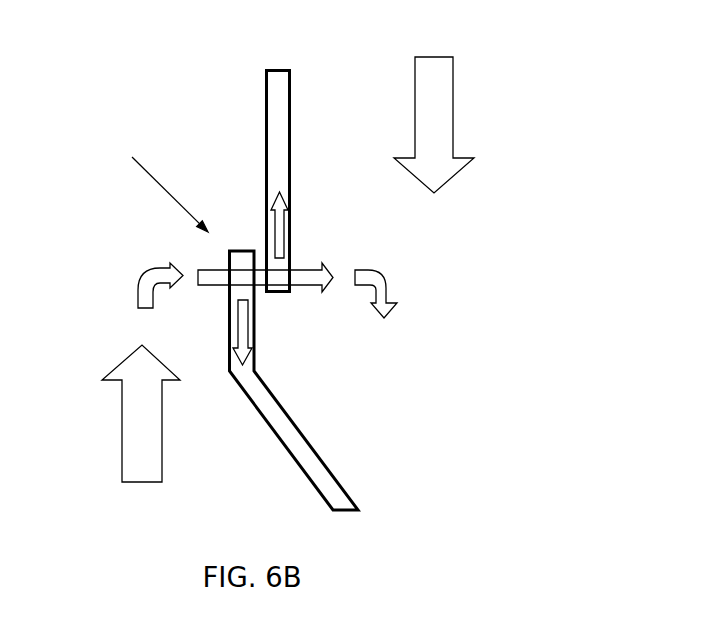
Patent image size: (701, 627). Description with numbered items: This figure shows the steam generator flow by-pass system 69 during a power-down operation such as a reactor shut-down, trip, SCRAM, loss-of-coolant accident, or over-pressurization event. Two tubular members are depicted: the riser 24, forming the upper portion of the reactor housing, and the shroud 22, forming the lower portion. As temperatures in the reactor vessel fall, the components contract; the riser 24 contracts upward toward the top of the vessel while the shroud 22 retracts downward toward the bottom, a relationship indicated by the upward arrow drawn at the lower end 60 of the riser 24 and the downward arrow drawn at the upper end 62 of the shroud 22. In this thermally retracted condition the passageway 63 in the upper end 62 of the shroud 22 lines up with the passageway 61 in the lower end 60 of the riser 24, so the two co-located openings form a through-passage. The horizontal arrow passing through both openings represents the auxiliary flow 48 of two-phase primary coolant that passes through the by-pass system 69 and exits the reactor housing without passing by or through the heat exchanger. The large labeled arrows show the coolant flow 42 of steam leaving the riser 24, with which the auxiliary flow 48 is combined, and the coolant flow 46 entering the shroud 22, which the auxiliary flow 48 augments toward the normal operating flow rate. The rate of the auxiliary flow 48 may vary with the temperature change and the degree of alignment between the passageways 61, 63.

The shroud 22 is at (323, 427).
The riser 24 is at (293, 172).
The coolant flow 42 is at (406, 101).
The coolant flow 46 is at (168, 427).
The auxiliary flow 48 is at (135, 270).
The lower end of the riser 60 is at (256, 205).
The passageway 61 is at (293, 264).
The upper end of the shroud 62 is at (258, 318).
The passageway 63 is at (217, 262).
The steam generator flow by-pass system 69 is at (156, 185).